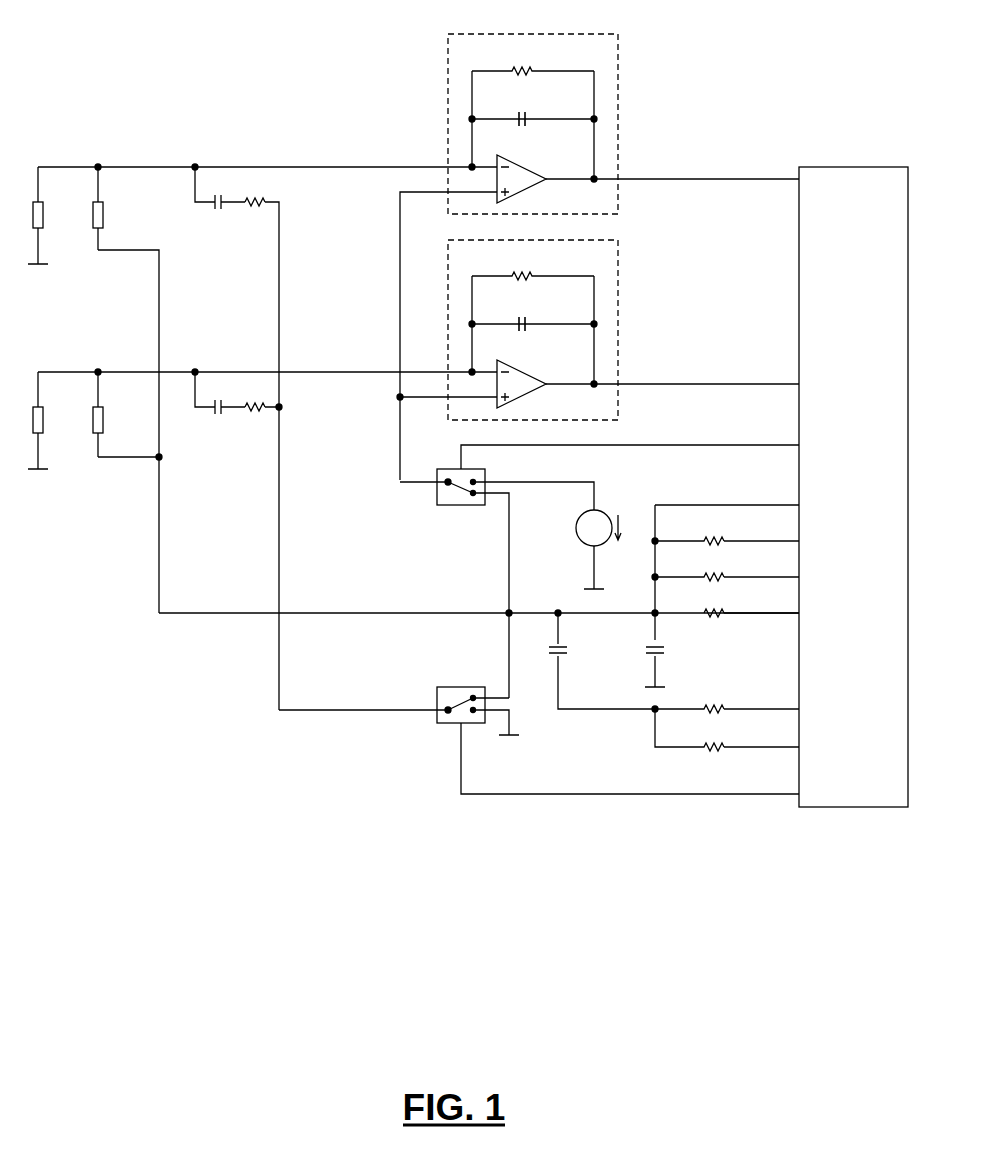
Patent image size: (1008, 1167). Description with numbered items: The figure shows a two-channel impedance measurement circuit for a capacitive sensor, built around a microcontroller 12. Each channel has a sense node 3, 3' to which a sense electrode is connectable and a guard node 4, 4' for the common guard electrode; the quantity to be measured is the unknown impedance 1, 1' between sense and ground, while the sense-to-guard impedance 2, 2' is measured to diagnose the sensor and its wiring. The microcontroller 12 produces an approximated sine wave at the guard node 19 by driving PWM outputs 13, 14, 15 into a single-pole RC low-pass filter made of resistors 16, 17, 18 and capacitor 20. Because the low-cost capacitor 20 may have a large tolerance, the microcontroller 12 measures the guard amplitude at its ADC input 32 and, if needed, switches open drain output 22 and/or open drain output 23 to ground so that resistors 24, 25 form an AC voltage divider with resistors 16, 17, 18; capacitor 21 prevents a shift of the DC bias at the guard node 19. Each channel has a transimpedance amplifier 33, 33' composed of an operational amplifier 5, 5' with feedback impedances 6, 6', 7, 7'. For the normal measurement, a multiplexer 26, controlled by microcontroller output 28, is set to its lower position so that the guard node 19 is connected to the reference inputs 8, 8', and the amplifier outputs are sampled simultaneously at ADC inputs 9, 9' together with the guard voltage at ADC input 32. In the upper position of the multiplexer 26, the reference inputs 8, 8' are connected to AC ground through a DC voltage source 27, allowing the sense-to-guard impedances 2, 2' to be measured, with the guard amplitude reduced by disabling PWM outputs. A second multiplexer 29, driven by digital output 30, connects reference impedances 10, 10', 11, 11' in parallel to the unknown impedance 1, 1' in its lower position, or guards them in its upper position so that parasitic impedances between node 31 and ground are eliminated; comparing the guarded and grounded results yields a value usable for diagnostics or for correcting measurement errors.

The unknown impedance 1 is at (31, 215).
The sense-to-guard impedance 2 is at (89, 208).
The sense node 3 is at (256, 159).
The guard node 4 is at (128, 422).
The operational amplifier 5 is at (509, 172).
The feedback impedance 6 is at (522, 107).
The feedback impedance 7 is at (533, 59).
The transimpedance amplifier reference input 8 is at (448, 336).
The ADC input 9 is at (672, 170).
The reference impedance 10 is at (220, 188).
The reference impedance 11 is at (262, 442).
The microcontroller 12 is at (854, 477).
The PWM output 13 is at (761, 532).
The PWM output 14 is at (761, 568).
The PWM output 15 is at (761, 603).
The resistor 16 is at (690, 531).
The resistor 17 is at (690, 567).
The resistor 18 is at (714, 602).
The guard node 19 is at (479, 604).
The capacitor 20 is at (642, 662).
The capacitor 21 is at (590, 662).
The open drain output 22 is at (761, 700).
The open drain output 23 is at (761, 737).
The resistor 24 is at (690, 699).
The resistor 25 is at (690, 730).
The multiplexer 26 is at (442, 476).
The DC voltage source 27 is at (547, 535).
The microcontroller output 28 is at (630, 447).
The multiplexer 29 is at (478, 700).
The digital output 30 is at (630, 759).
The node 31 is at (363, 700).
The ADC input 32 is at (725, 562).
The transimpedance amplifier 33 is at (533, 113).
The unknown impedance 1' is at (29, 420).
The sense-to-guard impedance 2' is at (87, 414).
The sense node 3' is at (267, 363).
The guard node 4' is at (130, 449).
The operational amplifier 5' is at (521, 377).
The feedback impedance 6' is at (522, 311).
The feedback impedance 7' is at (533, 264).
The transimpedance amplifier reference input 8' is at (447, 406).
The ADC input 9' is at (672, 375).
The reference impedance 10' is at (220, 393).
The reference impedance 11' is at (263, 395).
The transimpedance amplifier 33' is at (533, 319).